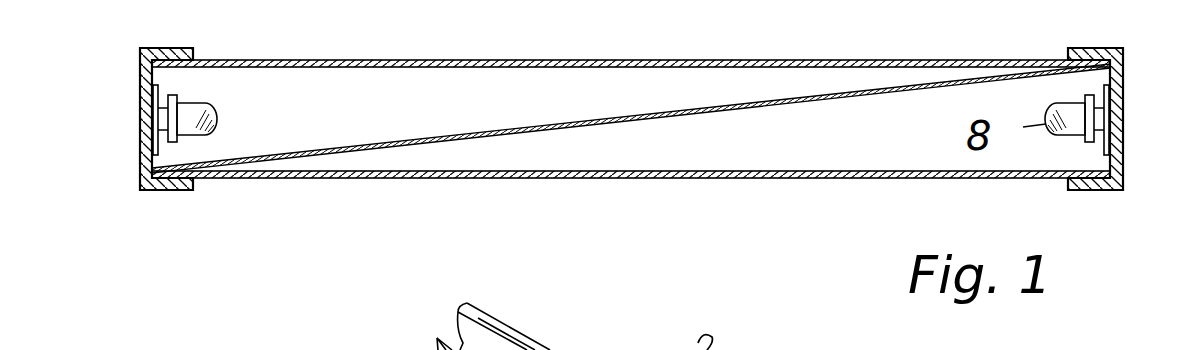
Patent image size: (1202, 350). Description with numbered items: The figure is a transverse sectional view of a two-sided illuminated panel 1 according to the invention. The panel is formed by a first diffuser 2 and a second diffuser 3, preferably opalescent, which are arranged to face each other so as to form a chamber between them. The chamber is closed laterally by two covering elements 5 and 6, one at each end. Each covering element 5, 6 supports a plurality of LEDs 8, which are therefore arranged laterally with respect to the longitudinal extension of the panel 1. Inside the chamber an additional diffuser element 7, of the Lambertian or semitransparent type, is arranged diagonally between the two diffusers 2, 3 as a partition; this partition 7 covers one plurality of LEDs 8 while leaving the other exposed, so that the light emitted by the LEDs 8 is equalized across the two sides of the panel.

The illuminated panel 1 is at (258, 249).
The first diffuser 2 is at (618, 60).
The second diffuser 3 is at (700, 181).
The covering element 5 is at (148, 146).
The covering element 6 is at (1107, 113).
The additional diffuser element 7 is at (492, 142).
The LEDs 8 is at (216, 117).